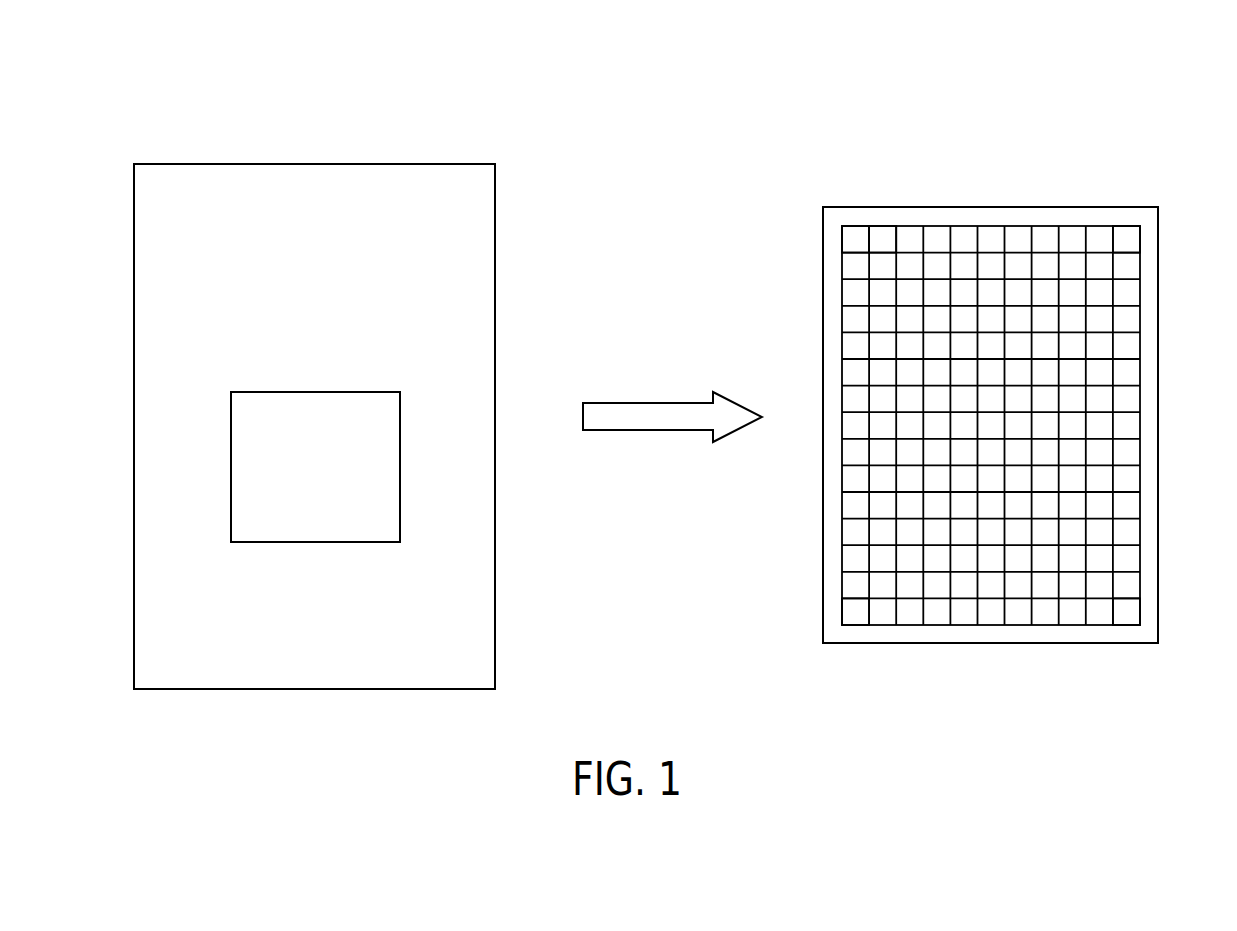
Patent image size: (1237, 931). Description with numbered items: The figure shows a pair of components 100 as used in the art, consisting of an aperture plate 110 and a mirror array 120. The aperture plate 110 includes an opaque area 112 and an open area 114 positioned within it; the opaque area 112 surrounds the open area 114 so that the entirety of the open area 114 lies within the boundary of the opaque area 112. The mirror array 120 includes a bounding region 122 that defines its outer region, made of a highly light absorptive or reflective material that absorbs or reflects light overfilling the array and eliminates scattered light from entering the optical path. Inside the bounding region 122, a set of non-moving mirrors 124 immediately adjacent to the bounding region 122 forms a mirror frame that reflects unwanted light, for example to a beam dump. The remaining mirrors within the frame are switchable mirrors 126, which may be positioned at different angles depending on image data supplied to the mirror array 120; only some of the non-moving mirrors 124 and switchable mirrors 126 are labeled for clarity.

The pair of components 100 is at (1167, 97).
The aperture plate 110 is at (469, 146).
The opaque area 112 is at (343, 177).
The open area 114 is at (308, 402).
The mirror array 120 is at (1002, 387).
The bounding region 122 is at (1097, 207).
The non-moving mirrors 124 is at (853, 240).
The switchable mirrors 126 is at (880, 262).